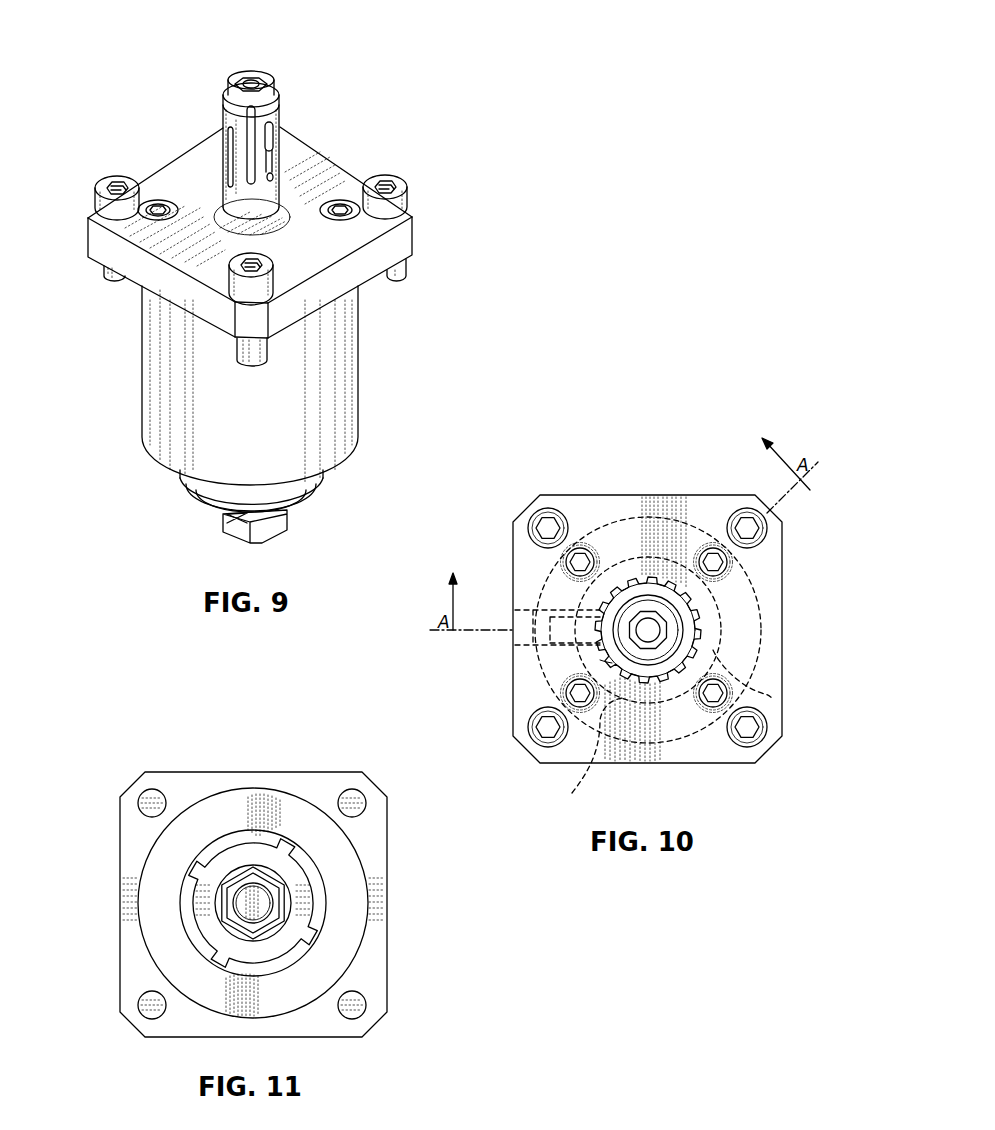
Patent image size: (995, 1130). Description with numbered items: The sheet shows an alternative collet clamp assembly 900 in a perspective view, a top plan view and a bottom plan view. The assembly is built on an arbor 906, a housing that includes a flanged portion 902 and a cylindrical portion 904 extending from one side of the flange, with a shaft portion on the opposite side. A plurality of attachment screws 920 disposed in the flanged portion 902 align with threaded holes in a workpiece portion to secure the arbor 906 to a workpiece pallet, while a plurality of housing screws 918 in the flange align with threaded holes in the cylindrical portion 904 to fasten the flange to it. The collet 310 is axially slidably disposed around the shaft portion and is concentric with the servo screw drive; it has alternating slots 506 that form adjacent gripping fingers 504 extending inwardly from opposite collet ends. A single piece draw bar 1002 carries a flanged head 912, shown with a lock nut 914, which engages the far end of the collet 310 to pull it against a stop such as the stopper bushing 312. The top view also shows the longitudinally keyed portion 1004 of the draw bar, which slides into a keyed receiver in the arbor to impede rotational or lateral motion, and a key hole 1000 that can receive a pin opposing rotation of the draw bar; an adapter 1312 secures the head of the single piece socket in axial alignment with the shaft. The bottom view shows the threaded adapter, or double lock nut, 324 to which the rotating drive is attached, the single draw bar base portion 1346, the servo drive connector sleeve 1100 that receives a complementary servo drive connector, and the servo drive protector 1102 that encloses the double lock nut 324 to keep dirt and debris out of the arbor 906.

In FIG. 9, the collet clamp assembly 900 is at (458, 117).
In FIG. 9, the flanged portion 902 is at (338, 177).
In FIG. 10, the flanged portion 902 is at (678, 752).
In FIG. 11, the flanged portion 902 is at (378, 943).
In FIG. 9, the cylindrical portion 904 is at (352, 377).
In FIG. 10, the cylindrical portion 904 is at (770, 690).
In FIG. 11, the cylindrical portion 904 is at (340, 847).
In FIG. 9, the arbor 906 is at (413, 236).
In FIG. 9, the flanged head 912 is at (277, 93).
In FIG. 10, the flanged head 912 is at (690, 627).
In FIG. 9, the lock nut 914 is at (250, 78).
In FIG. 10, the lock nut 914 is at (663, 647).
In FIG. 9, the housing screws 918 is at (160, 202).
In FIG. 10, the housing screws 918 is at (713, 707).
In FIG. 9, the attachment screws 920 is at (115, 178).
In FIG. 10, the attachment screws 920 is at (745, 732).
In FIG. 11, the attachment screws 920 is at (353, 1007).
In FIG. 9, the collet 310 is at (273, 115).
In FIG. 9, the stopper bushing 312 is at (223, 207).
In FIG. 9, the gripping fingers 504 is at (263, 138).
In FIG. 9, the alternating slots 506 is at (227, 112).
In FIG. 9, the threaded adapter 324 is at (227, 528).
In FIG. 11, the threaded adapter 324 is at (237, 922).
In FIG. 10, the key hole 1000 is at (517, 650).
In FIG. 10, the single piece draw bar 1002 is at (665, 643).
In FIG. 10, the keyed portion 1004 is at (612, 663).
In FIG. 10, the adapter 1312 is at (648, 729).
In FIG. 11, the servo drive connector sleeve 1100 is at (323, 897).
In FIG. 11, the servo drive protector 1102 is at (337, 867).
In FIG. 11, the single draw bar base portion 1346 is at (265, 905).